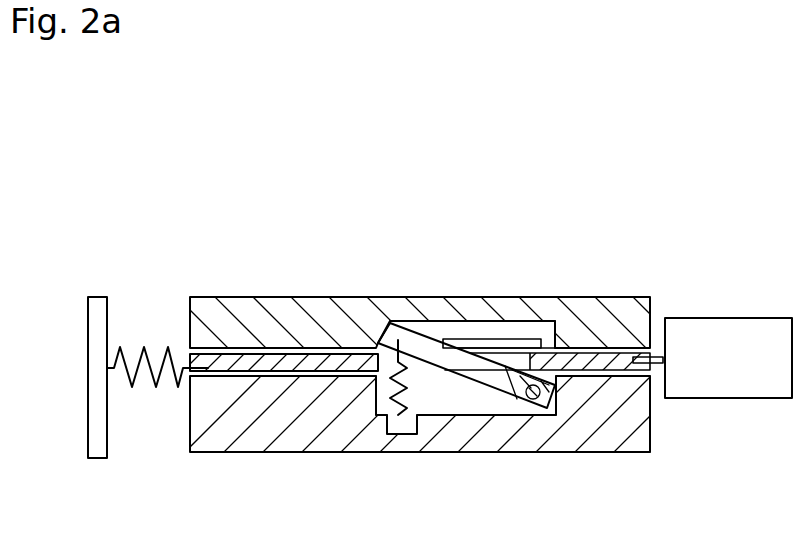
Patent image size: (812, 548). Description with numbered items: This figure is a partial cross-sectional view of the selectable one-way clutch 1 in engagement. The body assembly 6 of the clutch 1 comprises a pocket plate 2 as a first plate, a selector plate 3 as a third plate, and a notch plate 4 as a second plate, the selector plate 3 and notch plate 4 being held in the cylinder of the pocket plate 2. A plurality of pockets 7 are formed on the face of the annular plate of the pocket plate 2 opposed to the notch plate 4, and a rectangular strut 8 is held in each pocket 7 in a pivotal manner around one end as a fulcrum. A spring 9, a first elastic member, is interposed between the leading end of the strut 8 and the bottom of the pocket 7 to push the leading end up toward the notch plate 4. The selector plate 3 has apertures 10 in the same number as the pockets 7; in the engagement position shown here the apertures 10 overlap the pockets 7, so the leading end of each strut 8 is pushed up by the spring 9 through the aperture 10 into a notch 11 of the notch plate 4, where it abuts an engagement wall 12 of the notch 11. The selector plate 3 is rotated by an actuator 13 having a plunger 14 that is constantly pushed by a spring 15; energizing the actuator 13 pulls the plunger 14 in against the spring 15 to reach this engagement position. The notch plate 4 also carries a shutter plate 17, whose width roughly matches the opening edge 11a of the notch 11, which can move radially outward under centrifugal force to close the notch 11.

The selectable one-way clutch 1 is at (580, 226).
The pocket plate 2 is at (295, 443).
The selector plate 3 is at (309, 362).
The notch plate 4 is at (246, 310).
The body assembly 6 is at (607, 458).
The pocket 7 is at (467, 412).
The strut 8 is at (432, 338).
The spring 9 is at (417, 383).
The aperture 10 is at (505, 360).
The notch 11 is at (535, 323).
The opening edge 11a is at (548, 328).
The engagement wall 12 is at (398, 322).
The actuator 13 is at (722, 318).
The plunger 14 is at (655, 356).
The spring 15 is at (147, 347).
The shutter plate 17 is at (515, 338).